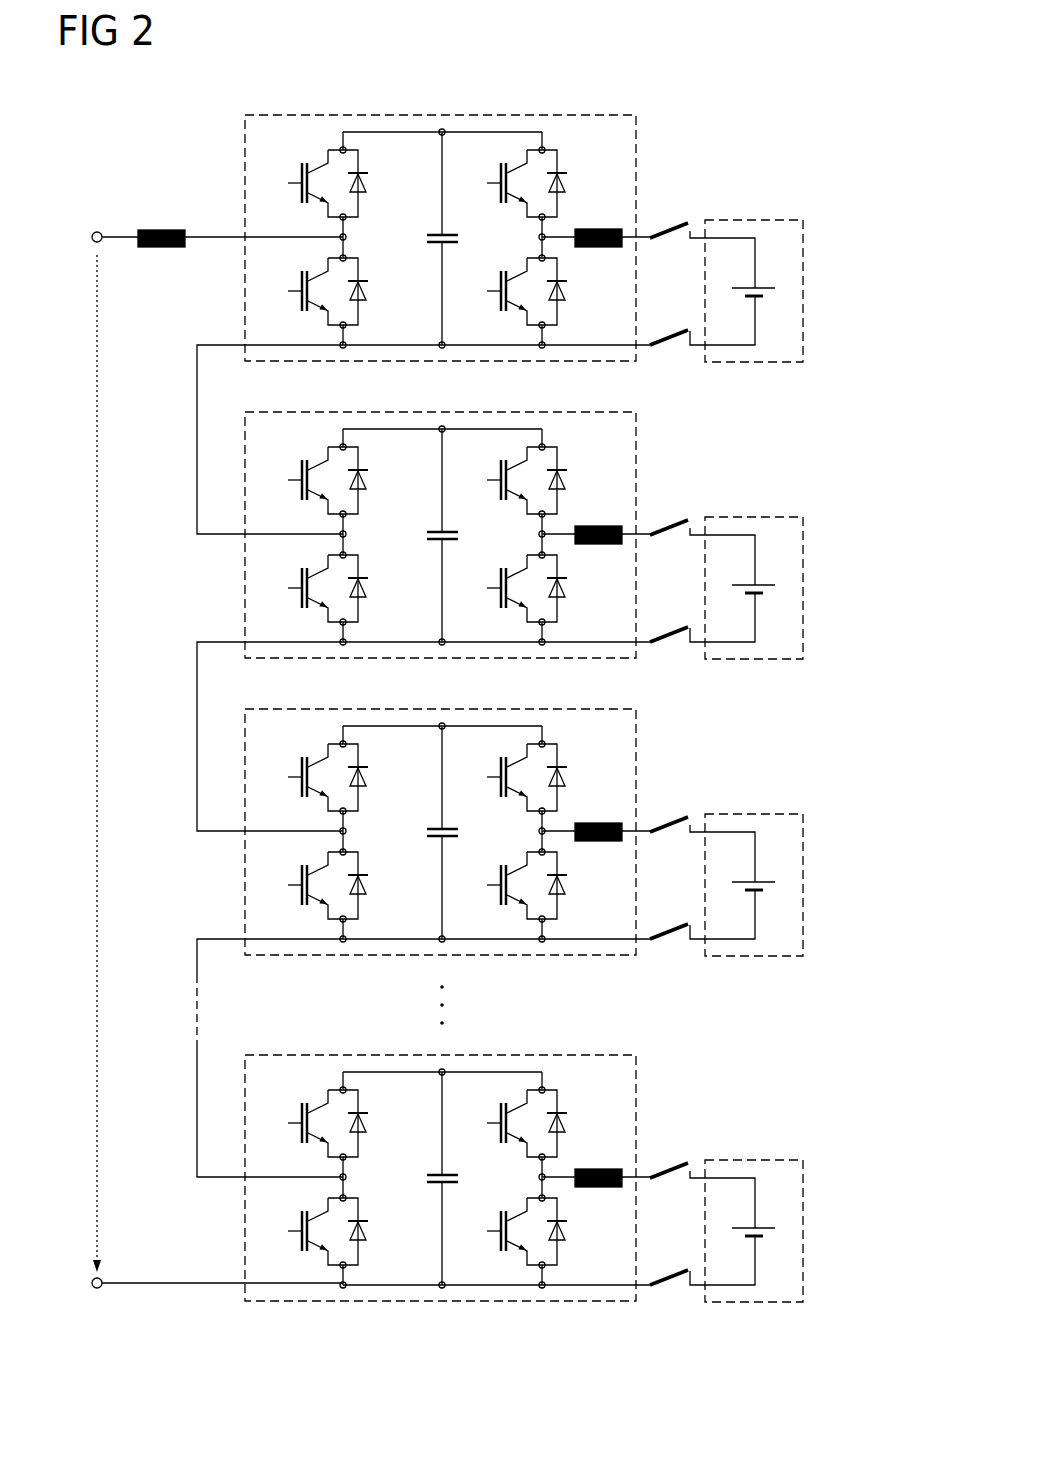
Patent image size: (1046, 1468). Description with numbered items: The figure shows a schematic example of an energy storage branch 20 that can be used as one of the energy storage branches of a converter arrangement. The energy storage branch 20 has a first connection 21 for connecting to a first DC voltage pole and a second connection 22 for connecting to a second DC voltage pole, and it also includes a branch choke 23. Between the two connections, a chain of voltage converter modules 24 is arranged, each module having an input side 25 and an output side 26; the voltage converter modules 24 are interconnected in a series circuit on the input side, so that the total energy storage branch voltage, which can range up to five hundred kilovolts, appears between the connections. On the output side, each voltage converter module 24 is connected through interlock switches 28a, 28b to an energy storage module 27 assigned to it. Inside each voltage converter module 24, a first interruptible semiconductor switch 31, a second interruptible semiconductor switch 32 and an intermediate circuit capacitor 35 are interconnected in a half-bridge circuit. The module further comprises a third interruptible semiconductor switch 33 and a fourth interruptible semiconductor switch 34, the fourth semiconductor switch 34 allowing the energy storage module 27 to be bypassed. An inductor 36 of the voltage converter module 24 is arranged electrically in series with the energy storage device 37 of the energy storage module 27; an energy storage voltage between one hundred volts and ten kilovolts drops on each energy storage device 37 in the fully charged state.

The energy storage branch 20 is at (480, 92).
The first connection 21 is at (97, 232).
The second connection 22 is at (97, 1289).
The branch choke 23 is at (152, 229).
The voltage converter module 24 is at (311, 115).
The input side 25 is at (220, 304).
The output side 26 is at (669, 372).
The energy storage module 27 is at (806, 245).
The interlock switch 28a is at (669, 220).
The interlock switch 28b is at (669, 342).
The first interruptible semiconductor switch 31 is at (297, 172).
The second interruptible semiconductor switch 32 is at (297, 283).
The third interruptible semiconductor switch 33 is at (494, 172).
The fourth interruptible semiconductor switch 34 is at (494, 283).
The intermediate circuit capacitor 35 is at (425, 236).
The inductor 36 is at (599, 228).
The energy storage device 37 is at (776, 297).